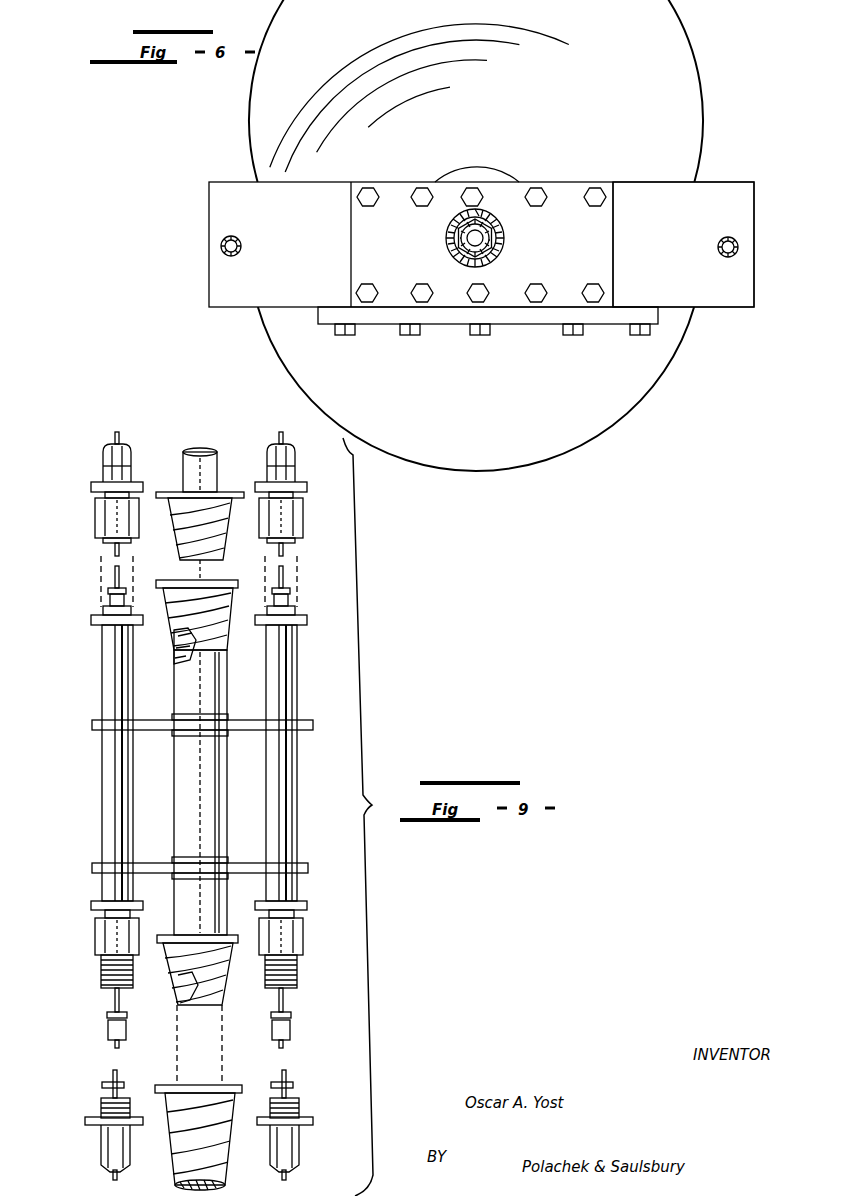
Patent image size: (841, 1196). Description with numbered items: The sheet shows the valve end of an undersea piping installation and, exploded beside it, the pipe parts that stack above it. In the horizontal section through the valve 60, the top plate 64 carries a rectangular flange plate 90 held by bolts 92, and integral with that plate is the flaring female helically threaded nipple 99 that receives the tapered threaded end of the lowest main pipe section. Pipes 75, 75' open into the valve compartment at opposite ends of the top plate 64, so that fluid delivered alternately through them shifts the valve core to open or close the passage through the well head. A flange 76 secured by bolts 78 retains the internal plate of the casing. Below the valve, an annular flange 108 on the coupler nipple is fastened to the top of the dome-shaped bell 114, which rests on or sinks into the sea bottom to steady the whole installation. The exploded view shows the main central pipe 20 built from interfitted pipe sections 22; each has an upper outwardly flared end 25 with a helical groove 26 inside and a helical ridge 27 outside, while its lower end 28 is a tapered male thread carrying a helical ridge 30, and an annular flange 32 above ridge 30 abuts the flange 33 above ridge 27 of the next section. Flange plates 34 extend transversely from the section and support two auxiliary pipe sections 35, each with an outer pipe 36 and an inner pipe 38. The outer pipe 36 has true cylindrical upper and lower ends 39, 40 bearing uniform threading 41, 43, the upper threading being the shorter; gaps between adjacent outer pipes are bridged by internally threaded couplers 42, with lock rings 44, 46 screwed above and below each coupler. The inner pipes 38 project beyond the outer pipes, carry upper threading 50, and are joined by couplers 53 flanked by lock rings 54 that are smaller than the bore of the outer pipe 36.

In FIG. 9, the main central pipe 20 is at (163, 783).
In FIG. 9, the pipe section 22 is at (207, 478).
In FIG. 9, the upper outwardly flared end 25 is at (224, 636).
In FIG. 9, the helical groove 26 is at (173, 630).
In FIG. 9, the helical ridge 27 is at (222, 634).
In FIG. 9, the lower end 28 is at (232, 962).
In FIG. 9, the helical ridge 30 is at (180, 977).
In FIG. 9, the annular flange 32 is at (227, 938).
In FIG. 9, the flange 33 is at (222, 580).
In FIG. 9, the flange plate 34 is at (308, 722).
In FIG. 9, the auxiliary pipe section 35 is at (100, 753).
In FIG. 9, the outer pipe 36 is at (112, 665).
In FIG. 9, the inner pipe 38 is at (112, 578).
In FIG. 9, the upper cylindrical end 39 is at (297, 612).
In FIG. 9, the lower cylindrical end 40 is at (297, 977).
In FIG. 9, the upper threading 41 is at (275, 608).
In FIG. 9, the coupler 42 is at (295, 938).
In FIG. 9, the lower threading 43 is at (297, 985).
In FIG. 9, the lock ring 44 is at (310, 905).
In FIG. 9, the lock ring 46 is at (310, 620).
In FIG. 9, the upper threading 50 is at (103, 608).
In FIG. 9, the coupler 53 is at (103, 600).
In FIG. 9, the lock ring 54 is at (105, 590).
In FIG. 6, the valve 60 is at (760, 242).
In FIG. 6, the top plate 64 is at (727, 290).
In FIG. 6, the pipe 75 is at (753, 252).
In FIG. 6, the pipe 75' is at (199, 247).
In FIG. 6, the flange 76 is at (384, 312).
In FIG. 6, the bolts 78 is at (340, 335).
In FIG. 6, the rectangular flange plate 90 is at (572, 195).
In FIG. 6, the bolts 92 is at (598, 192).
In FIG. 6, the nipple 99 is at (505, 238).
In FIG. 6, the annular flange 108 is at (497, 168).
In FIG. 6, the dome-shaped bell 114 is at (625, 383).